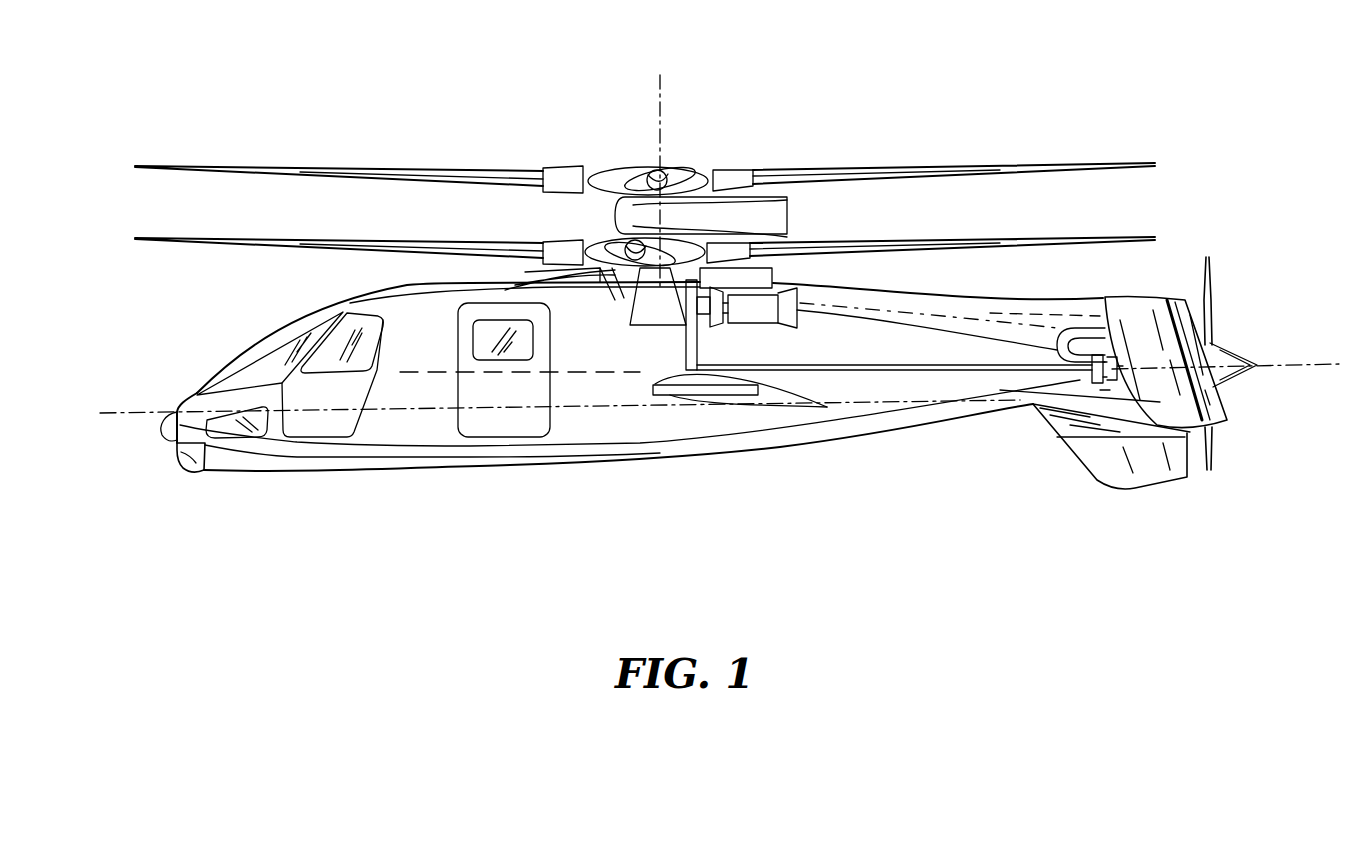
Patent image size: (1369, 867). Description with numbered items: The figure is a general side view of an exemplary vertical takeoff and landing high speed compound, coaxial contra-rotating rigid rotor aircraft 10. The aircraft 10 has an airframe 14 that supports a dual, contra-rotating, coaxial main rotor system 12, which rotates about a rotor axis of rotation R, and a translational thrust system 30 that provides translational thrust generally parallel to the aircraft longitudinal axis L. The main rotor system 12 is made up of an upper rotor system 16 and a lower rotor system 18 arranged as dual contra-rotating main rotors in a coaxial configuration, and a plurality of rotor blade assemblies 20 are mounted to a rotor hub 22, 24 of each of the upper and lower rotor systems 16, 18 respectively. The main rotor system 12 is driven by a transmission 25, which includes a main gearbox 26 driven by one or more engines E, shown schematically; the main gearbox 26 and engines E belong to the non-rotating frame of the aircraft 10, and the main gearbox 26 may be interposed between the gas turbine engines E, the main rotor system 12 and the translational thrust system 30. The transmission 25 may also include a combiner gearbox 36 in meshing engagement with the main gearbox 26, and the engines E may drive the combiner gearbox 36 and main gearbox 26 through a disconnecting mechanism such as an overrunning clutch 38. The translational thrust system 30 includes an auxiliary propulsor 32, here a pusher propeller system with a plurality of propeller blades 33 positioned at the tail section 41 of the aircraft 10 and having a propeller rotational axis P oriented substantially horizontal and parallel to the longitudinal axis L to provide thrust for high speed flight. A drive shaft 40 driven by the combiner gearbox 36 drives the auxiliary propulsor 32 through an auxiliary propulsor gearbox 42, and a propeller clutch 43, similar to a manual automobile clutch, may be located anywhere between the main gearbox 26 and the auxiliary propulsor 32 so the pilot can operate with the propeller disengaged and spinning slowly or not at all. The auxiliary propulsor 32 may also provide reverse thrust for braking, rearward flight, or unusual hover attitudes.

The rotary wing aircraft 10 is at (284, 126).
The main rotor system 12 is at (728, 143).
The airframe 14 is at (194, 396).
The upper rotor system 16 is at (609, 163).
The lower rotor system 18 is at (606, 236).
The rotor blade assemblies 20 is at (981, 166).
The rotor hub 22 is at (638, 165).
The rotor hub 24 is at (613, 249).
The transmission 25 is at (623, 352).
The main gearbox 26 is at (630, 326).
The translational thrust system 30 is at (1209, 248).
The auxiliary propulsor 32 is at (1210, 470).
The propeller blades 33 is at (1210, 282).
The combiner gearbox 36 is at (686, 336).
The overrunning clutch 38 is at (702, 320).
The drive shaft 40 is at (906, 363).
The tail section 41 is at (1077, 497).
The auxiliary propulsor gearbox 42 is at (1092, 383).
The propeller clutch 43 is at (1103, 392).
The engines E is at (770, 307).
The rotor axis of rotation R is at (662, 93).
The aircraft longitudinal axis L is at (890, 403).
The propeller rotational axis P is at (1268, 366).